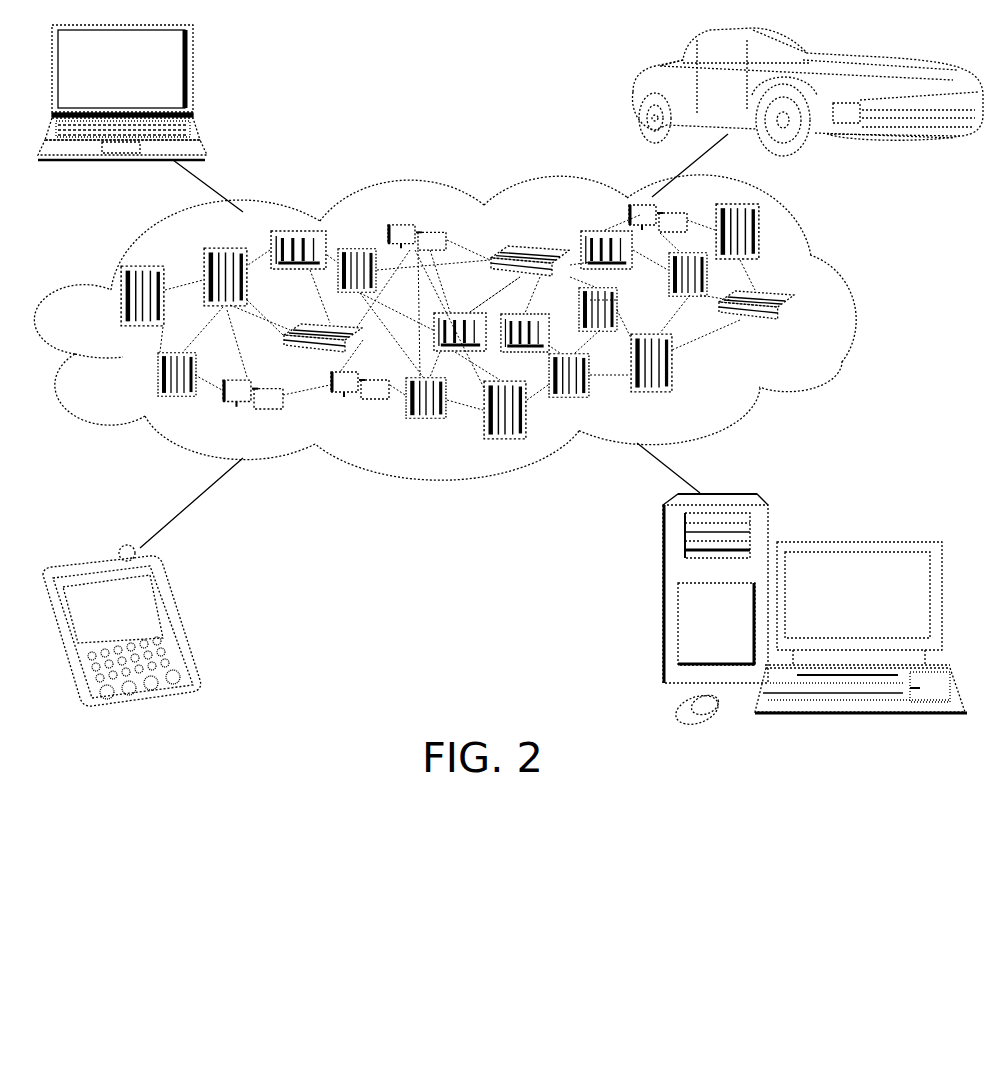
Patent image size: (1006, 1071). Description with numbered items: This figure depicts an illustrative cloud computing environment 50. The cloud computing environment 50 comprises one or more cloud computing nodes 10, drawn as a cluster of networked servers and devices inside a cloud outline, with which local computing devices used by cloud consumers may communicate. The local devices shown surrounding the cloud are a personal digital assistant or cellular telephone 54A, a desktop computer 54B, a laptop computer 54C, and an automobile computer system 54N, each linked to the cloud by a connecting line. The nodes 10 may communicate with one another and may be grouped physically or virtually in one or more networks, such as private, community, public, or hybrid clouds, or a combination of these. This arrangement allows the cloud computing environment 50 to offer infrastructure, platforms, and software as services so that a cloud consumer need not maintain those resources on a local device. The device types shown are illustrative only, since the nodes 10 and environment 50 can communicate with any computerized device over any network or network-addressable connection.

The cloud computing nodes 10 is at (815, 333).
The cloud computing environment 50 is at (857, 303).
The personal digital assistant or cellular telephone 54A is at (183, 620).
The desktop computer 54B is at (852, 542).
The laptop computer 54C is at (193, 77).
The automobile computer system 54N is at (637, 92).